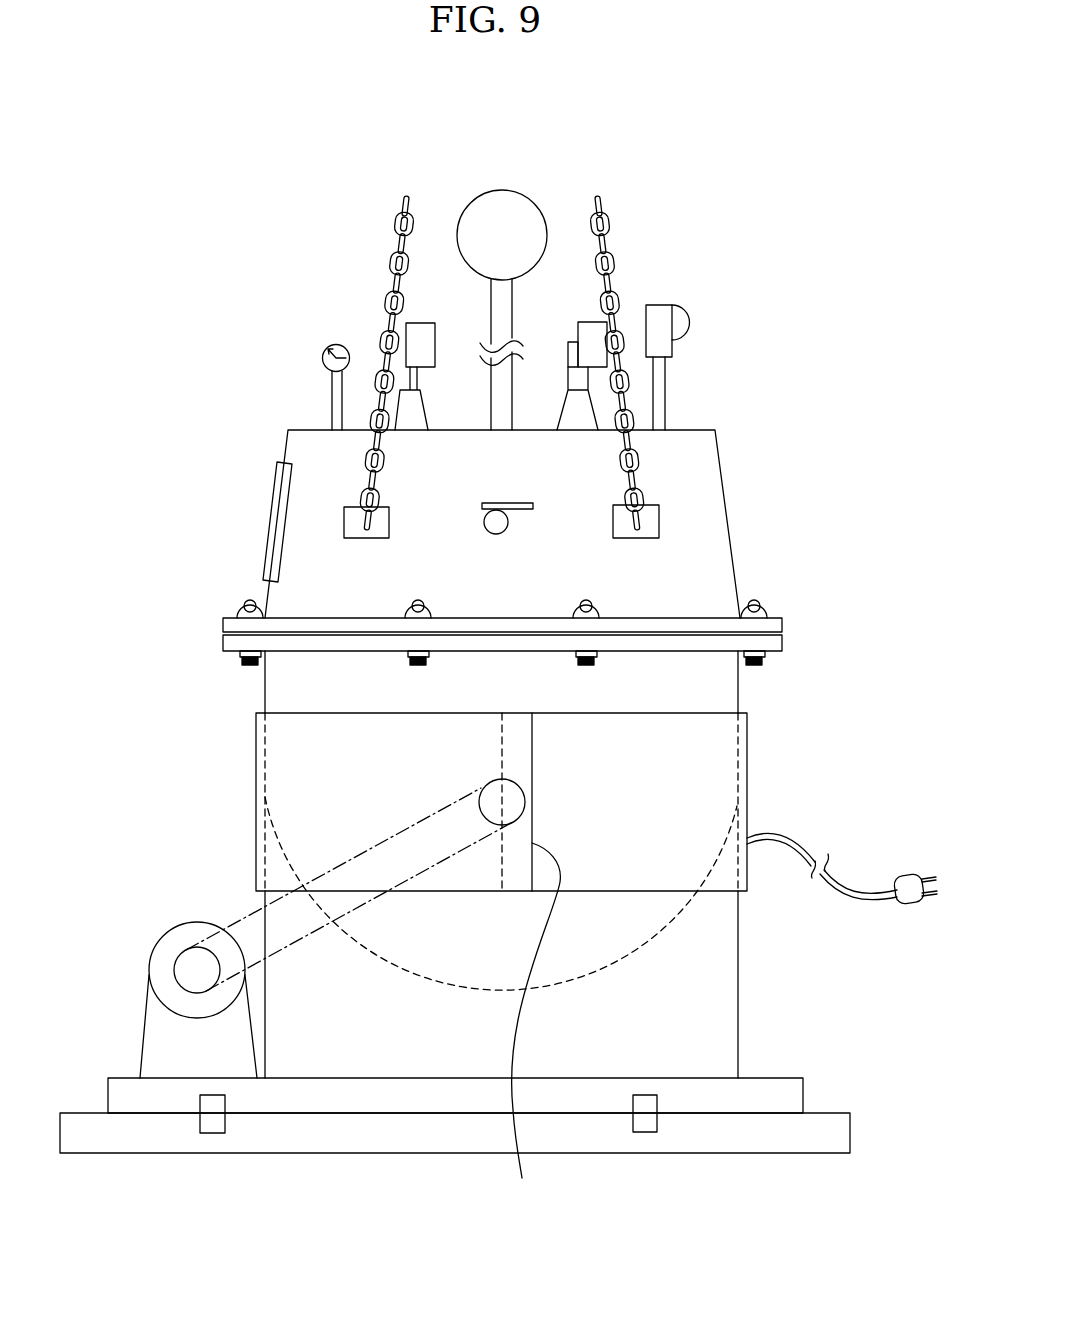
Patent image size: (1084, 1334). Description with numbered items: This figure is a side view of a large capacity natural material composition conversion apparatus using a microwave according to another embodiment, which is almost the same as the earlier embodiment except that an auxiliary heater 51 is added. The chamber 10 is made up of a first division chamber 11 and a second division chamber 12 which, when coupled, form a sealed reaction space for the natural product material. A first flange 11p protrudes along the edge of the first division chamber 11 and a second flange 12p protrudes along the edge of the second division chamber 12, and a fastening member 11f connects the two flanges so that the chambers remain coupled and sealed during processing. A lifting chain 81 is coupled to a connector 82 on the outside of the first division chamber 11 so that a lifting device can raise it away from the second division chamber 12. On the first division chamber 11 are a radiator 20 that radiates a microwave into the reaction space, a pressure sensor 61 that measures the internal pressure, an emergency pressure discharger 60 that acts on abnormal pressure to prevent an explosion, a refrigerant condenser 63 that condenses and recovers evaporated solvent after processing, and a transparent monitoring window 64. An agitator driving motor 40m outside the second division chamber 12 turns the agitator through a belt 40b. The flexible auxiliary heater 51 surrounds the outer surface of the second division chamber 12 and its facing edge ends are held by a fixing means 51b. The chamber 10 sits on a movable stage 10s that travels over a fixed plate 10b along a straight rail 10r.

The chamber 10 is at (506, 754).
The first division chamber 11 is at (702, 572).
The second division chamber 12 is at (553, 864).
The first flange 11p is at (223, 622).
The second flange 12p is at (223, 645).
The fastening member 11f is at (248, 668).
The radiator 20 is at (419, 322).
The emergency pressure discharger 60 is at (660, 307).
The pressure sensor 61 is at (327, 341).
The refrigerant condenser 63 is at (520, 198).
The monitoring window 64 is at (273, 517).
The lifting chain 81 is at (642, 461).
The connector 82 is at (660, 520).
The auxiliary heater 51 is at (745, 777).
The fixing means 51b is at (531, 1026).
The agitator driving motor 40m is at (163, 940).
The belt 40b is at (252, 910).
The movable stage 10s is at (777, 1088).
The fixed plate 10b is at (817, 1138).
The straight rail 10r is at (643, 1123).